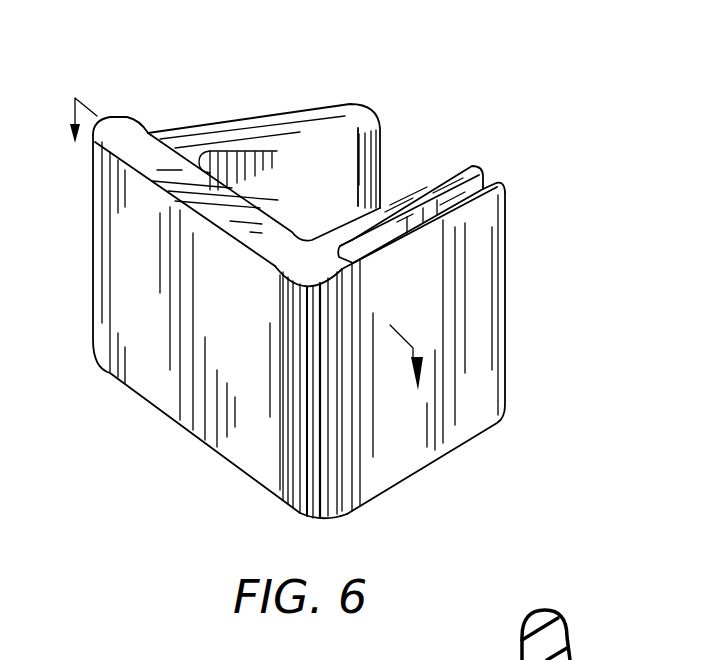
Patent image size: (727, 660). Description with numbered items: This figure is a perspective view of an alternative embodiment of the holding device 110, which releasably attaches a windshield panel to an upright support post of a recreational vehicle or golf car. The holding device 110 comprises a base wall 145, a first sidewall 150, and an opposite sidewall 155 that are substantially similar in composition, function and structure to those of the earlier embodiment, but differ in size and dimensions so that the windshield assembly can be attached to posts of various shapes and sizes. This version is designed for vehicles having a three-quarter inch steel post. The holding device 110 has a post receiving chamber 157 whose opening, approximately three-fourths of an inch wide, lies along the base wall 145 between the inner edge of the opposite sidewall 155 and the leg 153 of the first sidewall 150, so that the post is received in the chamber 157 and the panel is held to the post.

The holding device 110 is at (527, 69).
The base wall 145 is at (168, 390).
The first sidewall 150 is at (473, 274).
The leg 153 is at (458, 167).
The opposite sidewall 155 is at (249, 128).
The post receiving chamber 157 is at (392, 169).